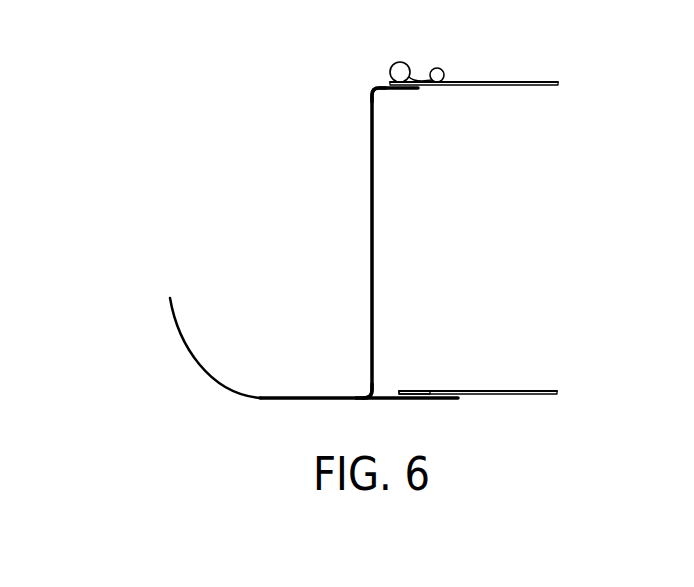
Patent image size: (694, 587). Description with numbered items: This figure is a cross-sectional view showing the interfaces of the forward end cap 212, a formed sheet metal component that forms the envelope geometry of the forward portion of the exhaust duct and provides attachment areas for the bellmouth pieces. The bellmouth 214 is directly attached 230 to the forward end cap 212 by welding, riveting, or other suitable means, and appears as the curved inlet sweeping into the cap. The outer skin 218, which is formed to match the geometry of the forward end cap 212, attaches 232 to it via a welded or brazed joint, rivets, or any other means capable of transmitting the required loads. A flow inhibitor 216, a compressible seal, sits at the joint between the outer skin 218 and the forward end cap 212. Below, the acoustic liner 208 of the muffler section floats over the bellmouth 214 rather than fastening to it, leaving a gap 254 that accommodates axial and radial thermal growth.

The acoustic liner 208 is at (512, 396).
The forward end cap 212 is at (372, 182).
The bellmouth 214 is at (210, 381).
The flow inhibitor 216 is at (401, 62).
The outer skin 218 is at (520, 88).
The attachment of fixed bellmouth to forward end cap 230 is at (354, 396).
The attachment of outer skin to forward end cap 232 is at (371, 88).
The gap 254 is at (425, 391).